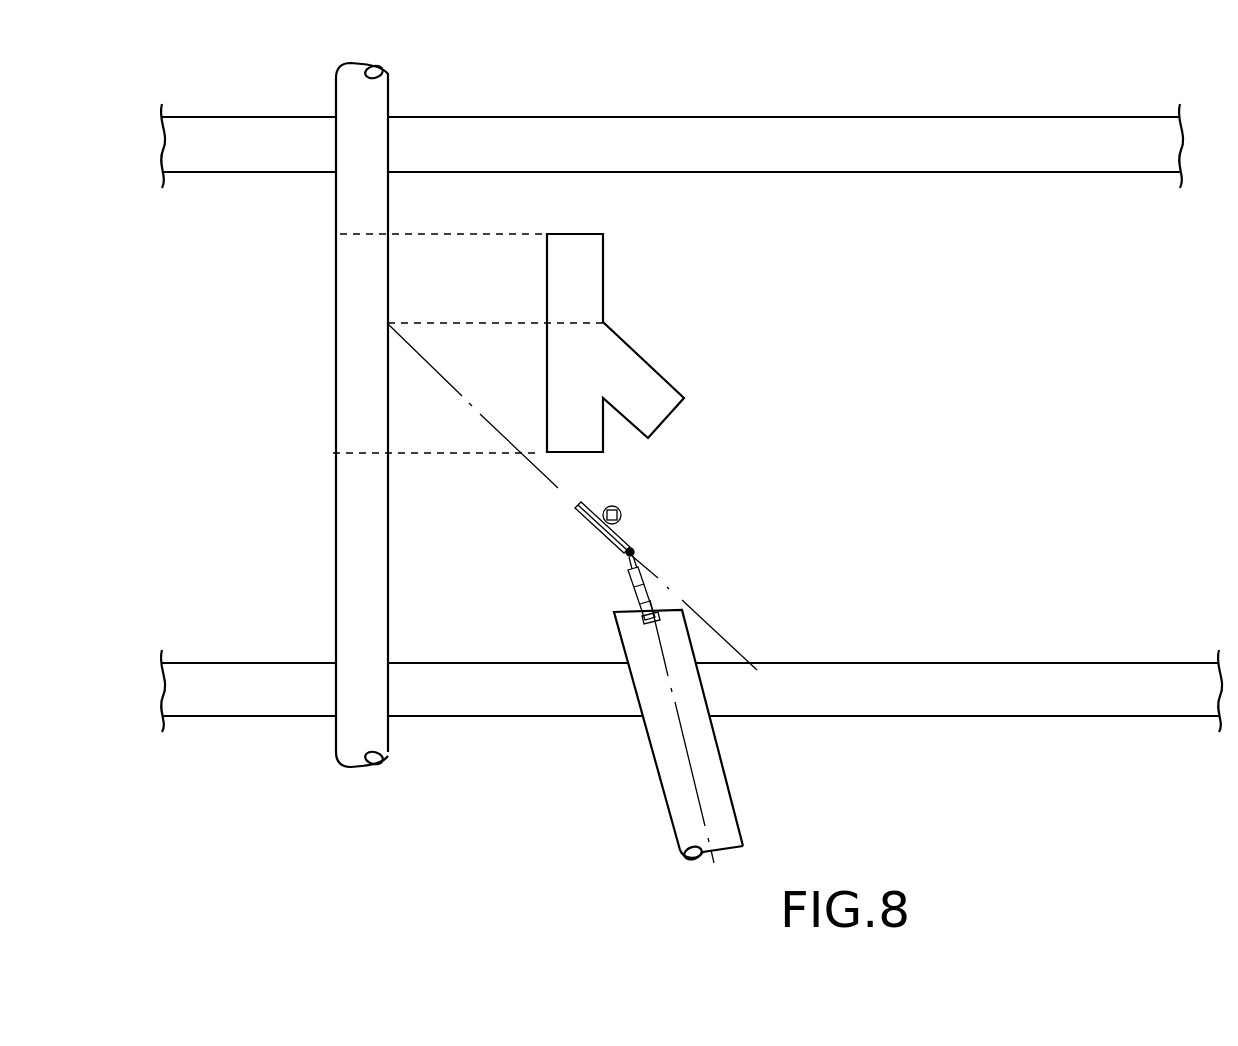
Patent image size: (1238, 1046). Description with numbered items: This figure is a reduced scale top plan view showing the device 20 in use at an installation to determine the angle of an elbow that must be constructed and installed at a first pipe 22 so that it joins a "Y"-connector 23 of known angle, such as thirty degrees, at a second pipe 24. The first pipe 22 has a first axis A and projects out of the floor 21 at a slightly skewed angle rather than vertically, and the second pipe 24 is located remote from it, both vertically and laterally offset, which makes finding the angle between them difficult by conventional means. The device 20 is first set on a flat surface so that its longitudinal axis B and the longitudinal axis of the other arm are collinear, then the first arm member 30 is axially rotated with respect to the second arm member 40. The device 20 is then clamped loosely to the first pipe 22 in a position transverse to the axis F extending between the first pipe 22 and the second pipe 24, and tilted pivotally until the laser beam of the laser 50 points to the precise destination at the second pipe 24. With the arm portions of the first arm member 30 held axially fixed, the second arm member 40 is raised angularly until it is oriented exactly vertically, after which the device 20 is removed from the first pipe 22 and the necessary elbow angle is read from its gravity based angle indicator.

The device 20 is at (740, 480).
The floor 21 is at (1003, 690).
The first pipe 22 is at (670, 762).
The "Y"-connector 23 is at (608, 360).
The second pipe 24 is at (360, 306).
The first arm member 30 is at (653, 593).
The second arm member 40 is at (603, 537).
The laser 50 is at (615, 505).
The axis F is at (558, 485).
The longitudinal axis B is at (720, 630).
The first axis A is at (705, 820).